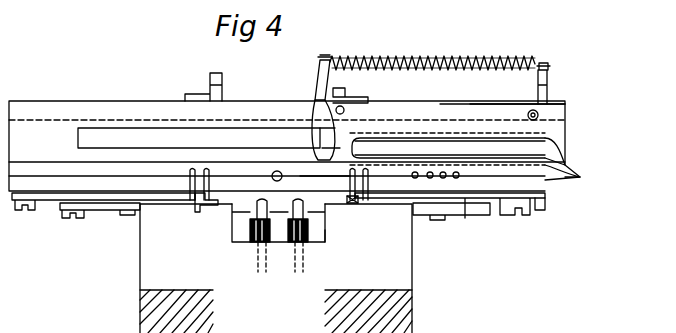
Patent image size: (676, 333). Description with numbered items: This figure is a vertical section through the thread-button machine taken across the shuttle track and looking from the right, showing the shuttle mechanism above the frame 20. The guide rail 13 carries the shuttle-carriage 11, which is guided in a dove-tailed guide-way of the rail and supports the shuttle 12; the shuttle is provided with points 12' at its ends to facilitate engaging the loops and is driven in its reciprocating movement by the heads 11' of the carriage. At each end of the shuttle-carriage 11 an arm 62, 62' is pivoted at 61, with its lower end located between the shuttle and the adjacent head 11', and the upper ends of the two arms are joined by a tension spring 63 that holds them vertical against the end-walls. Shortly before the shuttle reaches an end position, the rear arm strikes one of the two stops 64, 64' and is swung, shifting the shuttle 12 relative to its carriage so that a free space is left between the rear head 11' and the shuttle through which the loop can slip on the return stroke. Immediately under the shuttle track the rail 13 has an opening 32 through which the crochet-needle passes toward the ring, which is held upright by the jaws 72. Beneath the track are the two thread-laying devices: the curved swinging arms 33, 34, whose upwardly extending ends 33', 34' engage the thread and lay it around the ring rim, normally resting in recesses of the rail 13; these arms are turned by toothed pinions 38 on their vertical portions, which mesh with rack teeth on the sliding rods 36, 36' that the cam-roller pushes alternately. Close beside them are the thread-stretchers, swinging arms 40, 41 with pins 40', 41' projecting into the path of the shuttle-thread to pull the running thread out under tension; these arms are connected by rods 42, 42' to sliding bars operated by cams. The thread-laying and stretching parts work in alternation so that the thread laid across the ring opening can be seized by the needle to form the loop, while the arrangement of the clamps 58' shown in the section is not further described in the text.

The rail 13 is at (53, 105).
The stop 64 is at (219, 87).
The arm 62 is at (318, 107).
The tension spring 63 is at (448, 57).
The stop 64' is at (356, 89).
The pivot 61 is at (350, 110).
The shuttle-carriage 11 is at (502, 98).
The arm 62' is at (561, 83).
The head 11' is at (450, 157).
The tip 12' is at (567, 180).
The shuttle 12 is at (325, 185).
The opening 32 is at (279, 170).
The pin 40' is at (190, 167).
The upwardly extending end 33' is at (225, 167).
The swinging arm 34 is at (352, 200).
The upwardly extending end 34' is at (378, 200).
The pin 41' is at (414, 173).
The swinging arm 40 is at (103, 212).
The rod 42 is at (100, 217).
The swinging arm 33 is at (199, 212).
The swinging arm 41 is at (450, 223).
The rod 42' is at (451, 221).
The jaw 72 is at (520, 200).
The frame 20 is at (140, 295).
The sliding rod 36 is at (264, 231).
The sliding rod 36' is at (345, 247).
The toothed pinion 38 is at (255, 242).
The clamp 58' is at (310, 235).